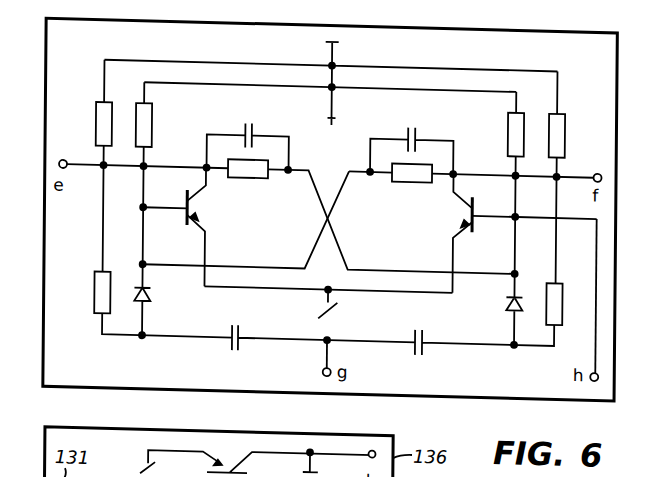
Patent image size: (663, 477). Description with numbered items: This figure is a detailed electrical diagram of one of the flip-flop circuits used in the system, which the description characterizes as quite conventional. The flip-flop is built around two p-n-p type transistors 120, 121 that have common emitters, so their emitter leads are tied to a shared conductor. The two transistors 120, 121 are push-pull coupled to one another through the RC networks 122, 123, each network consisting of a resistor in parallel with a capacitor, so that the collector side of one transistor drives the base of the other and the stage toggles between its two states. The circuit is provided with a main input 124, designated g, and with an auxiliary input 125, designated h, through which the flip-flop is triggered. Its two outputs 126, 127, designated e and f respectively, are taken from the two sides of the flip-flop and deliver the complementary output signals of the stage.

The p-n-p type transistor 120 is at (197, 202).
The p-n-p type transistor 121 is at (462, 205).
The RC network 122 is at (241, 122).
The RC network 123 is at (421, 120).
The main input 124 is at (326, 364).
The auxiliary input 125 is at (595, 366).
The output 126 is at (64, 157).
The output 127 is at (599, 157).